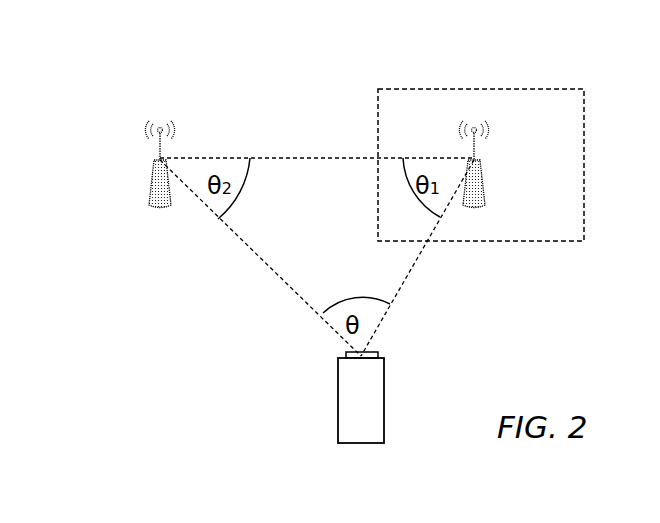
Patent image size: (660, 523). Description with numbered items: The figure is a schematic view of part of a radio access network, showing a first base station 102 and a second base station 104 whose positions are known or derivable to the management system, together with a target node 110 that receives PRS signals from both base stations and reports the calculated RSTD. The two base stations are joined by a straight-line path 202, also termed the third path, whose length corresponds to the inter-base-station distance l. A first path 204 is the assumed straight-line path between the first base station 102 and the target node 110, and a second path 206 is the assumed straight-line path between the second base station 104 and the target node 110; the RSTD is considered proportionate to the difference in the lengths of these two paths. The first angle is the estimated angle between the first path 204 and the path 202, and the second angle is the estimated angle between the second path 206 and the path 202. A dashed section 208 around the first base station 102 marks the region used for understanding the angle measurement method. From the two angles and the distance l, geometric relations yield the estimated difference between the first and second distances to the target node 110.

The first base station 102 is at (487, 178).
The second base station 104 is at (146, 183).
The target node 110 is at (338, 395).
The straight-line path 202 is at (270, 158).
The first path 204 is at (402, 292).
The second path 206 is at (226, 235).
The section 208 is at (570, 89).